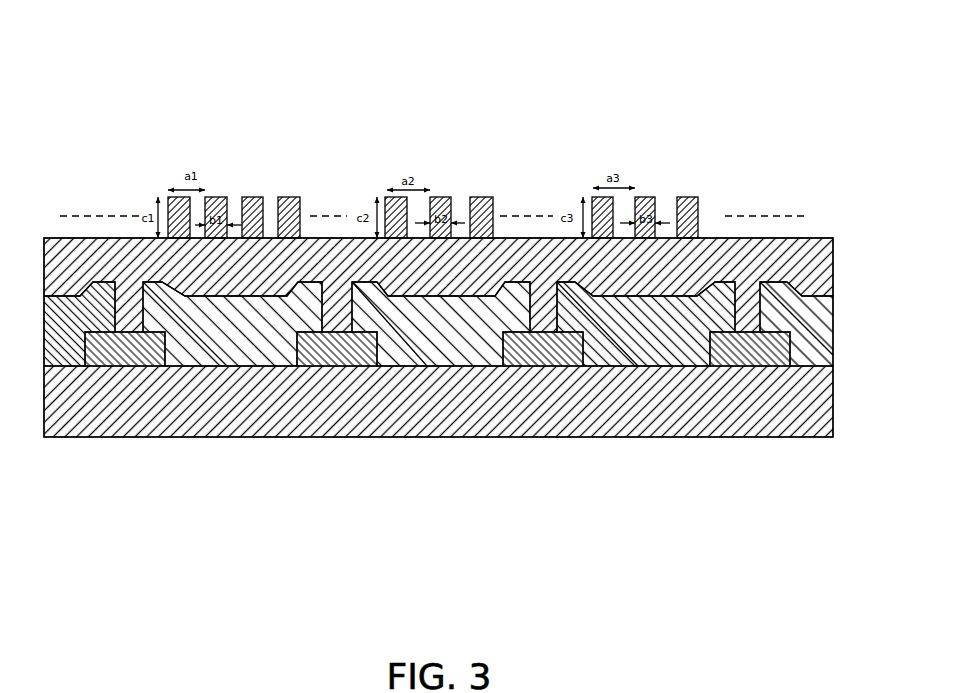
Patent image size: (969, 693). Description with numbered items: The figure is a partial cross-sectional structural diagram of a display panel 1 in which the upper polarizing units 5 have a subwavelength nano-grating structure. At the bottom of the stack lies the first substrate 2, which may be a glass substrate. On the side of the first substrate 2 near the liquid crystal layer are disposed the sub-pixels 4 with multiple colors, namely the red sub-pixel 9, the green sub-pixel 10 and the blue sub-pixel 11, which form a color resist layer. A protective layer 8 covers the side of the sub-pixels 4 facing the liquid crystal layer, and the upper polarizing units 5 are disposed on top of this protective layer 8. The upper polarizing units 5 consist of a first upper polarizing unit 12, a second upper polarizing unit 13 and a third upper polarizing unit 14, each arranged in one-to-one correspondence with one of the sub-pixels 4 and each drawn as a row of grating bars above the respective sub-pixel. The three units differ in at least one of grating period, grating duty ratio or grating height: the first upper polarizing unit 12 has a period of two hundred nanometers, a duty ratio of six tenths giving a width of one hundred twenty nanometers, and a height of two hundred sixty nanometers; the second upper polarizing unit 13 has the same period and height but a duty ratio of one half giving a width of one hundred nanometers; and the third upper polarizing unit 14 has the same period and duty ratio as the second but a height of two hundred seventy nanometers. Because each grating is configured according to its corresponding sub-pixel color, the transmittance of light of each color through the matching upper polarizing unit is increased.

The display panel 1 is at (119, 170).
The first substrate 2 is at (109, 396).
The sub-pixels 4 is at (437, 449).
The upper polarizing units 5 is at (433, 122).
The protective layer 8 is at (806, 258).
The red sub-pixel 9 is at (238, 333).
The green sub-pixel 10 is at (443, 333).
The blue sub-pixel 11 is at (646, 404).
The first upper polarizing unit 12 is at (258, 197).
The second upper polarizing unit 13 is at (450, 196).
The third upper polarizing unit 14 is at (645, 159).